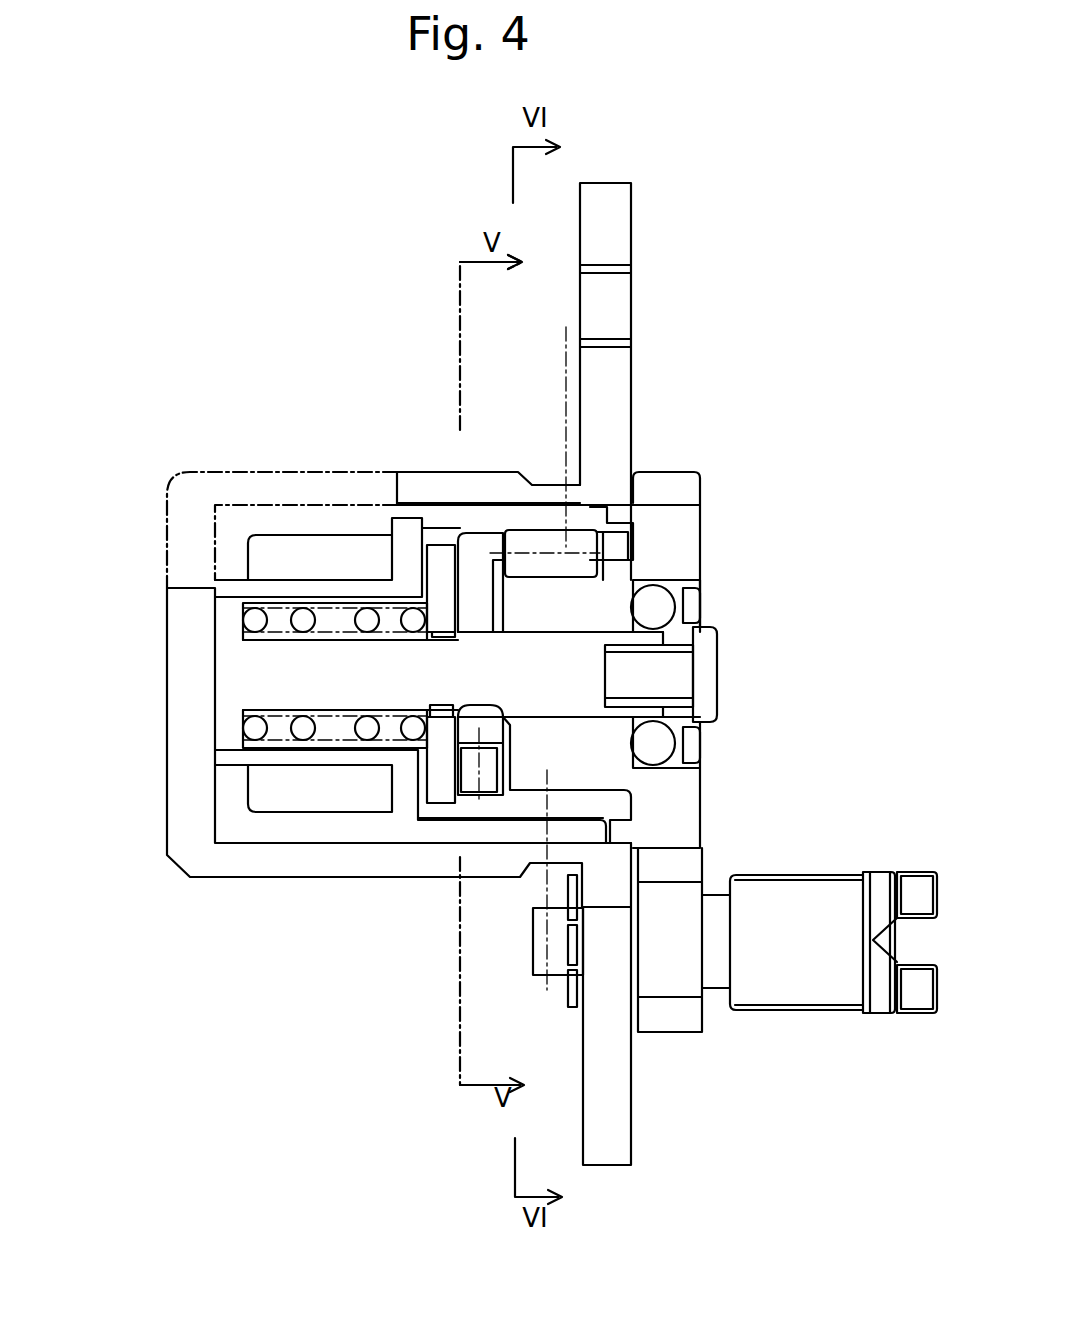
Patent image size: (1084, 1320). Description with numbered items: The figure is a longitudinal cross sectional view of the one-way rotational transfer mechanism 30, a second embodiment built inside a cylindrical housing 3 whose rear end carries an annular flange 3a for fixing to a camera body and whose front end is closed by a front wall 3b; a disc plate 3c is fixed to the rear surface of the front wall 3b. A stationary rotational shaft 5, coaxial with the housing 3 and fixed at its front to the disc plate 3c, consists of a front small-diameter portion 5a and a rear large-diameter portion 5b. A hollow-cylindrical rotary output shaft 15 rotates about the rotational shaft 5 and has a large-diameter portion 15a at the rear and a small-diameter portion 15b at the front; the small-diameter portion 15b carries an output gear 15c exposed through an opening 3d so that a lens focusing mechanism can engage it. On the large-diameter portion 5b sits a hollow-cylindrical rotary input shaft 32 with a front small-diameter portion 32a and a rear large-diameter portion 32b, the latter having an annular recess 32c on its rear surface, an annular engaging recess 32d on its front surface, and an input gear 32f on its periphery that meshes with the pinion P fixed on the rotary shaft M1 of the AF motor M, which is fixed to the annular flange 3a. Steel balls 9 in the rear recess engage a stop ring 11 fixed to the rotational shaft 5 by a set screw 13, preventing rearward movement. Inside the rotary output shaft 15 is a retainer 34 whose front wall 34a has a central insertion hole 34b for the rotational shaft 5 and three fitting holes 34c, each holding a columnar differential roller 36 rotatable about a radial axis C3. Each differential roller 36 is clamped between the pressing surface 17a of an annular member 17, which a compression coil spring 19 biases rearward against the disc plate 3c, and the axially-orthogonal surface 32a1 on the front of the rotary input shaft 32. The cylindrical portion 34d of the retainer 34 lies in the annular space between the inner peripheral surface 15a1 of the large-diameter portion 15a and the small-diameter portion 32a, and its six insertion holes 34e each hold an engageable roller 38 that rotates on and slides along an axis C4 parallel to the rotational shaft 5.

The one-way rotational transfer mechanism 30 is at (814, 247).
The cylindrical housing 3 is at (354, 742).
The annular flange 3a is at (622, 367).
The front wall 3b is at (180, 743).
The disc plate 3c is at (222, 632).
The opening 3d is at (193, 590).
The rotational shaft 5 is at (257, 675).
The front small-diameter portion 5a is at (265, 678).
The rear large-diameter portion 5b is at (573, 673).
The steel balls 9 is at (660, 752).
The stop ring 11 is at (695, 738).
The set screw 13 is at (707, 640).
The rotary output shaft 15 is at (227, 523).
The small-diameter portion 15b is at (270, 583).
The output gear 15c is at (302, 547).
The large-diameter portion 15a is at (408, 517).
The inner peripheral surface 15a1 is at (527, 530).
The annular member 17 is at (465, 745).
The pressing surface 17a is at (462, 545).
The compression coil spring 19 is at (305, 725).
The rotary input shaft 32 is at (652, 568).
The small-diameter portion 32a is at (535, 530).
The axially-orthogonal surface 32a1 is at (488, 585).
The large-diameter portion 32b is at (695, 557).
The annular recess 32c is at (655, 600).
The annular engaging recess 32d is at (603, 505).
The input gear 32f is at (653, 480).
The retainer 34 is at (548, 763).
The front wall 34a is at (448, 567).
The insertion hole 34b is at (455, 735).
The fitting holes 34c is at (452, 767).
The cylindrical portion 34d is at (460, 733).
The insertion holes 34e is at (593, 520).
The differential roller 36 is at (470, 780).
The engageable roller 38 is at (610, 580).
The axis of differential roller C3 is at (556, 912).
The axis of engageable roller C4 is at (558, 419).
The pinion P is at (672, 1032).
The AF motor M is at (819, 1008).
The rotary shaft M1 is at (717, 977).